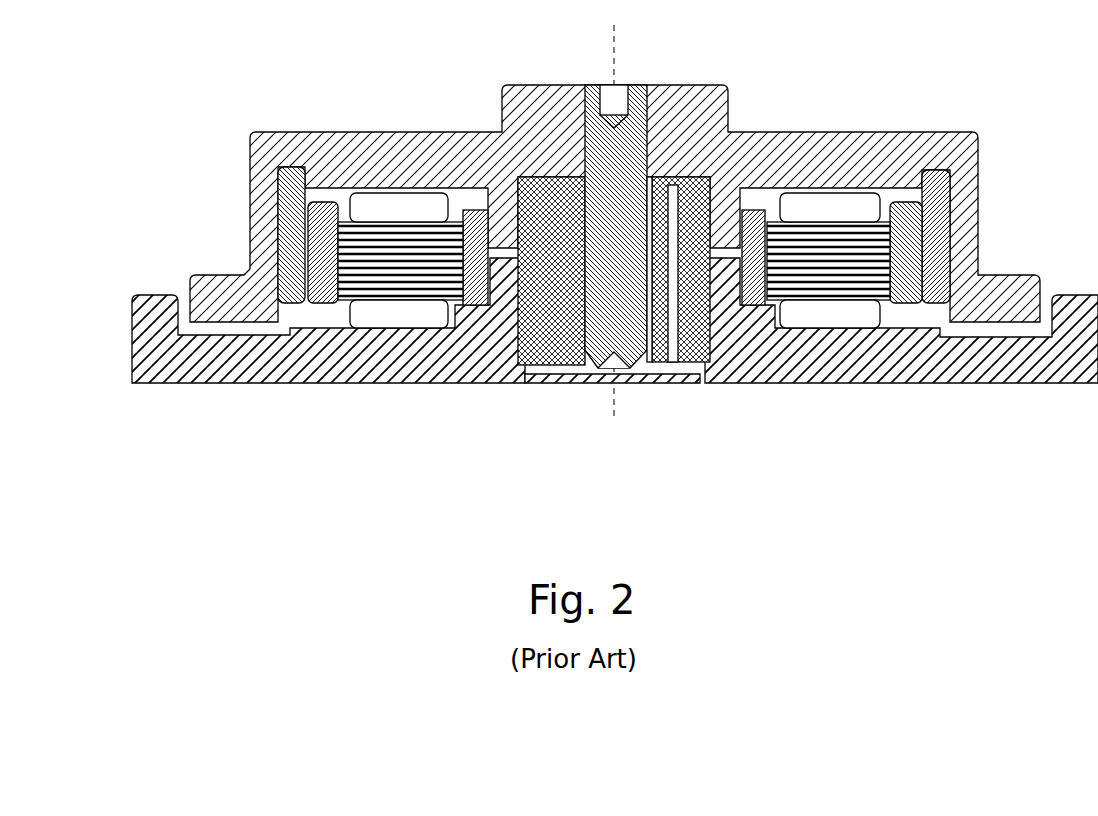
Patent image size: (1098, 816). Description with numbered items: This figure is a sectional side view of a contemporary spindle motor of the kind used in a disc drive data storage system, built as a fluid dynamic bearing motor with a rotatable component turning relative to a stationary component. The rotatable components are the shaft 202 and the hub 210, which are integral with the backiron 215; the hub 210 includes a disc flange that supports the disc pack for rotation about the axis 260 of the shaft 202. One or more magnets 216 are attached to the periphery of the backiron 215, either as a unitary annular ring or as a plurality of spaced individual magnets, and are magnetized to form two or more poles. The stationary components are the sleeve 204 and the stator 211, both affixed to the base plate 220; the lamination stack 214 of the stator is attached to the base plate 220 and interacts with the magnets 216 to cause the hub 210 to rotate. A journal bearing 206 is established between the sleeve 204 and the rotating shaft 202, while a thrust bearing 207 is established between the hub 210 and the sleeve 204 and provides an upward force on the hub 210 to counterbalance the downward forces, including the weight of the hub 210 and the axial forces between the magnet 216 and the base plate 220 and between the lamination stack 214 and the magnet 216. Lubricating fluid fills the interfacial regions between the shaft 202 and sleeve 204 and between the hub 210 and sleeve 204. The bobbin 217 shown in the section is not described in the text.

The shaft 202 is at (627, 280).
The sleeve 204 is at (547, 320).
The journal bearing 206 is at (592, 242).
The thrust bearing 207 is at (545, 176).
The hub 210 is at (724, 90).
The stator 211 is at (720, 378).
The lamination stack 214 is at (293, 363).
The backiron 215 is at (290, 195).
The magnet 216 is at (325, 200).
The bobbin 217 is at (367, 317).
The base plate 220 is at (452, 345).
The axis 260 is at (616, 70).